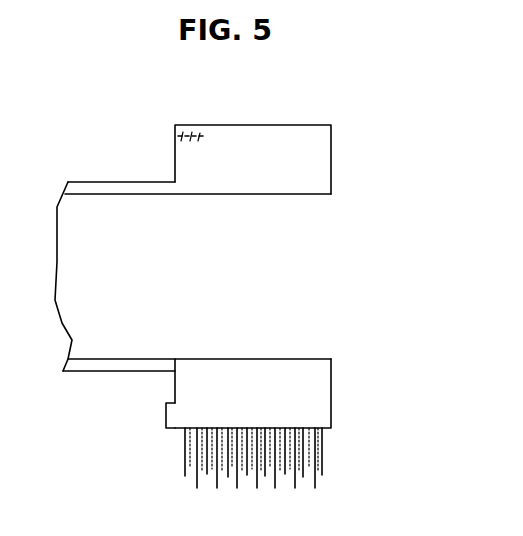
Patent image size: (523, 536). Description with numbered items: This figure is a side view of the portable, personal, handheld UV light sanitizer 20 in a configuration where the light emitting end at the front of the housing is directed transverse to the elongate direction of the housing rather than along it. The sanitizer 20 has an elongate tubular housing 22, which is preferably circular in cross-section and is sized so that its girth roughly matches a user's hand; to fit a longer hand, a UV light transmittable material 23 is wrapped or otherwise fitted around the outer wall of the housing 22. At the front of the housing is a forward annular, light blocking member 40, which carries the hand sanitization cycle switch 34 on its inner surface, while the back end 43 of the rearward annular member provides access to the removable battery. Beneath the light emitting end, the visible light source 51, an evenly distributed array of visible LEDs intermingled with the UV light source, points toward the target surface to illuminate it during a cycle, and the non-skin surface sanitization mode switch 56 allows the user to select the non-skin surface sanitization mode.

The UV light sanitizer 20 is at (258, 283).
The elongate tubular housing 22 is at (169, 276).
The UV light transmittable material 23 is at (96, 181).
The hand sanitization cycle switch 34 is at (172, 138).
The forward annular light blocking member 40 is at (300, 132).
The back end 43 is at (331, 372).
The visible light source 51 is at (300, 455).
The non-skin surface sanitization mode switch 56 is at (166, 418).